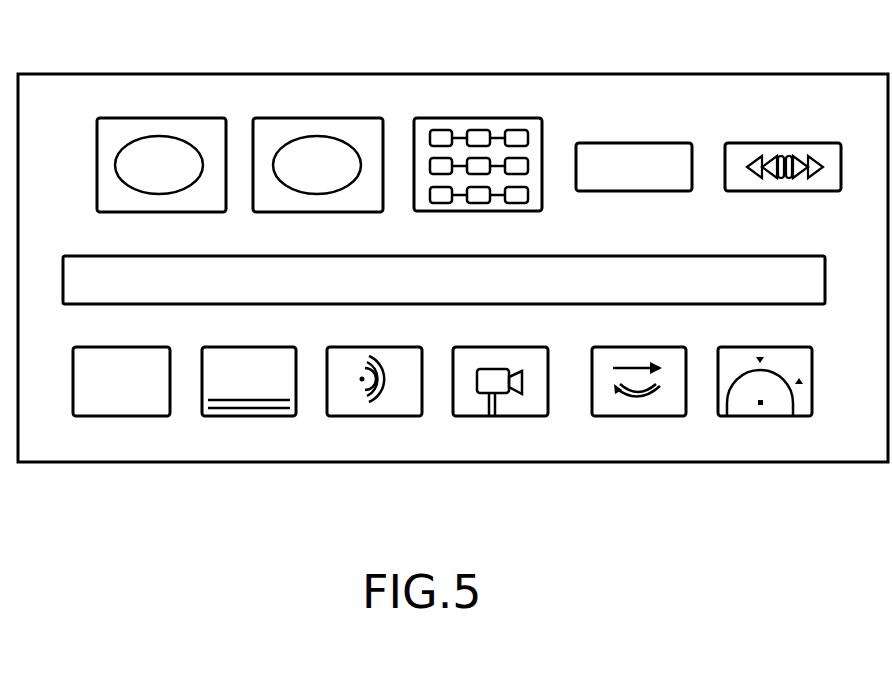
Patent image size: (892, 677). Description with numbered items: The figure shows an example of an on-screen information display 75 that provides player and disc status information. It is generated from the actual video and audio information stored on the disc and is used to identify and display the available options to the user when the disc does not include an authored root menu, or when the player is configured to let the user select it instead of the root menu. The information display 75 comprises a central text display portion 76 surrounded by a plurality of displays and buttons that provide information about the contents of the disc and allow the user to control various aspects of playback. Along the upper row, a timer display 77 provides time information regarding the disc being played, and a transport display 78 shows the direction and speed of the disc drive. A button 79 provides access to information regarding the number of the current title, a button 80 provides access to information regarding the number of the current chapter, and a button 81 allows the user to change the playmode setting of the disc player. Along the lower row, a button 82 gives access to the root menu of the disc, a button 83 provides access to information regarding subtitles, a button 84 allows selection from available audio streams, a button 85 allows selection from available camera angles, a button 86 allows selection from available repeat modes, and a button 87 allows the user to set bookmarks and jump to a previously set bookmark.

The information display 75 is at (496, 45).
The text display portion 76 is at (762, 256).
The timer display 77 is at (628, 143).
The transport display 78 is at (780, 143).
The button 79 is at (157, 118).
The button 80 is at (318, 118).
The button 81 is at (478, 118).
The button 82 is at (137, 416).
The button 83 is at (270, 416).
The button 84 is at (392, 416).
The button 85 is at (522, 416).
The button 86 is at (660, 416).
The button 87 is at (788, 416).